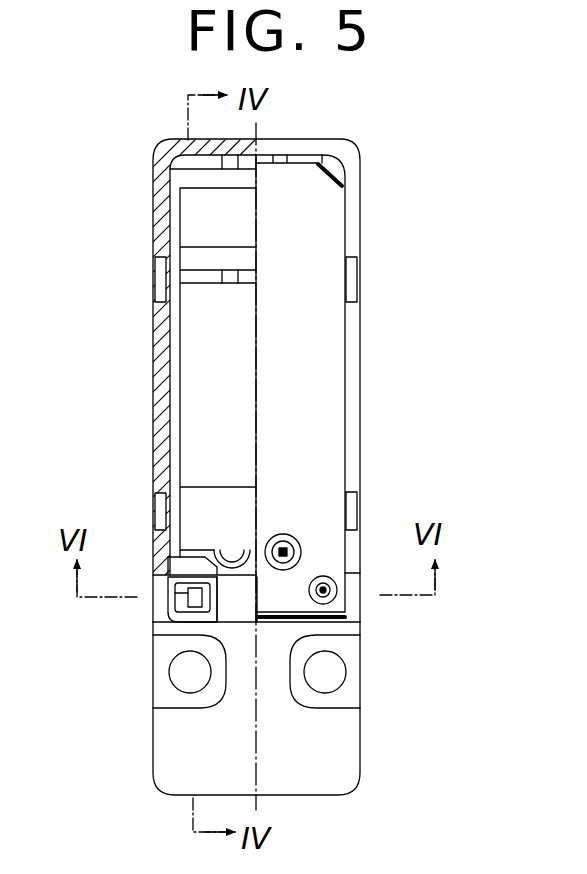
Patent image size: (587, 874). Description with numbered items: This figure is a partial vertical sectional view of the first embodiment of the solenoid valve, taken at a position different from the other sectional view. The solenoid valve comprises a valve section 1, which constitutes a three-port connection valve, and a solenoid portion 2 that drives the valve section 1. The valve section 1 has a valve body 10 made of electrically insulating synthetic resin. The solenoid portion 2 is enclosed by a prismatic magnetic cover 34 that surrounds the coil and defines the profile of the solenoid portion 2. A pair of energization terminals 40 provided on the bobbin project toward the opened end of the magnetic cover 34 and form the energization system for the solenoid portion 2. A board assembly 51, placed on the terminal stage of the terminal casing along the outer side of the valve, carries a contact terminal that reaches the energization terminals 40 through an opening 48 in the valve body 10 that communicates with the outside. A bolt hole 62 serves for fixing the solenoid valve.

The valve section 1 is at (351, 466).
The solenoid portion 2 is at (293, 380).
The valve body 10 is at (352, 757).
The magnetic cover 34 is at (328, 143).
The energization terminals 40 is at (166, 585).
The opening 48 is at (180, 593).
The board assembly 51 is at (354, 370).
The bolt hole 62 is at (186, 686).